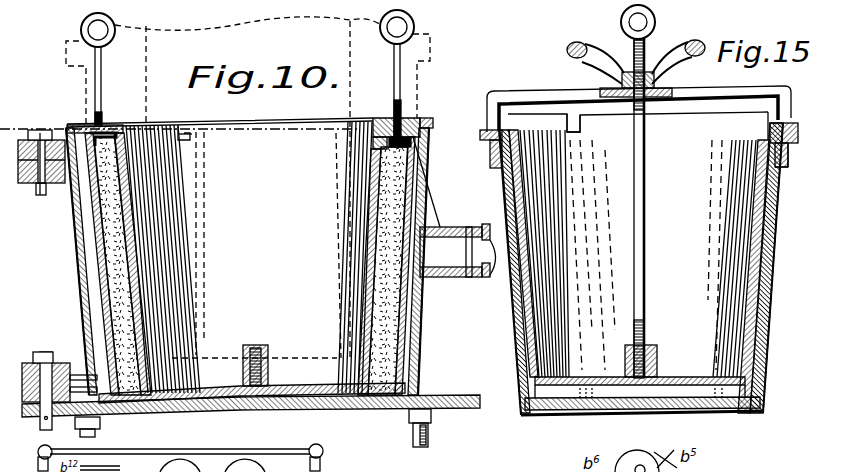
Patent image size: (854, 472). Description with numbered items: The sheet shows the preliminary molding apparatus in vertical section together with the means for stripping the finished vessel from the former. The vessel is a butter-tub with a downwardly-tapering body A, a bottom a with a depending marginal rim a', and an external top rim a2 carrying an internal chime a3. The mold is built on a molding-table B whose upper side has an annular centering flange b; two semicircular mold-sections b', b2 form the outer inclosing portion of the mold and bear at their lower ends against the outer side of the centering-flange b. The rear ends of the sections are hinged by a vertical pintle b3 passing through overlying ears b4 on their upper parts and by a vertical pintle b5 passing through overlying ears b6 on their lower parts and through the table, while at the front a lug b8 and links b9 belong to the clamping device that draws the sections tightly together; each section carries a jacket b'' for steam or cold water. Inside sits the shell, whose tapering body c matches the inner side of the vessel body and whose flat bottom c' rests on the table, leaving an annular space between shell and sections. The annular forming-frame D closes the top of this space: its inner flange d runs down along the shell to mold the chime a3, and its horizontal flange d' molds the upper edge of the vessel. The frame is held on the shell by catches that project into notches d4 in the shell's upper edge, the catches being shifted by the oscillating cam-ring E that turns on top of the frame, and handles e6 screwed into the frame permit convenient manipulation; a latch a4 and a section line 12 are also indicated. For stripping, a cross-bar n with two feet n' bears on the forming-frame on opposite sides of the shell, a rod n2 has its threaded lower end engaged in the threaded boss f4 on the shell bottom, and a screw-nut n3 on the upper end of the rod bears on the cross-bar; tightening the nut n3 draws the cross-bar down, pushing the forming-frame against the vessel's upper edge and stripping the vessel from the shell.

In FIG. 10, the handles e6 is at (102, 61).
In FIG. 10, the oscillating cam-ring E is at (107, 127).
In FIG. 15, the oscillating cam-ring E is at (482, 139).
In FIG. 10, the annular forming-frame D is at (320, 131).
In FIG. 15, the annular forming-frame D is at (765, 134).
In FIG. 10, the horizontal flange d' is at (432, 172).
In FIG. 10, the latch a4 is at (184, 125).
In FIG. 10, the external annular top rim a2 is at (189, 140).
In FIG. 15, the external annular top rim a2 is at (789, 168).
In FIG. 10, the semicircular mold-section b' is at (81, 261).
In FIG. 10, the insulating casing wall b'' is at (89, 264).
In FIG. 10, the tapering body of shell c is at (251, 264).
In FIG. 15, the tapering body of shell c is at (638, 253).
In FIG. 10, the bottom a is at (253, 257).
In FIG. 15, the bottom a is at (640, 413).
In FIG. 10, the semicircular mold-section b2 is at (412, 350).
In FIG. 10, the flat bottom of shell c' is at (252, 384).
In FIG. 15, the flat bottom of shell c' is at (640, 373).
In FIG. 10, the molding-table B is at (452, 409).
In FIG. 10, the boss f4 is at (272, 352).
In FIG. 15, the boss f4 is at (660, 345).
In FIG. 10, the overlying ears b4 is at (27, 185).
In FIG. 10, the vertical pintle b3 is at (30, 130).
In FIG. 10, the bolt 12 is at (62, 251).
In FIG. 10, the overlying ears b6 is at (25, 362).
In FIG. 10, the vertical pintle b5 is at (53, 355).
In FIG. 10, the lug b8 is at (455, 250).
In FIG. 10, the links b9 is at (478, 272).
In FIG. 10, the annular centering rib or flange b is at (399, 420).
In FIG. 15, the cross-bar n is at (639, 98).
In FIG. 15, the feet n' is at (637, 98).
In FIG. 15, the notches d4 is at (575, 131).
In FIG. 15, the rod n2 is at (648, 226).
In FIG. 15, the screw-nut n3 is at (622, 80).
In FIG. 15, the downwardly-tapering body A is at (515, 330).
In FIG. 15, the depending marginal flange or rim a' is at (788, 269).
In FIG. 15, the internal chime or rabbet a3 is at (799, 150).
In FIG. 15, the inner flange d is at (639, 271).